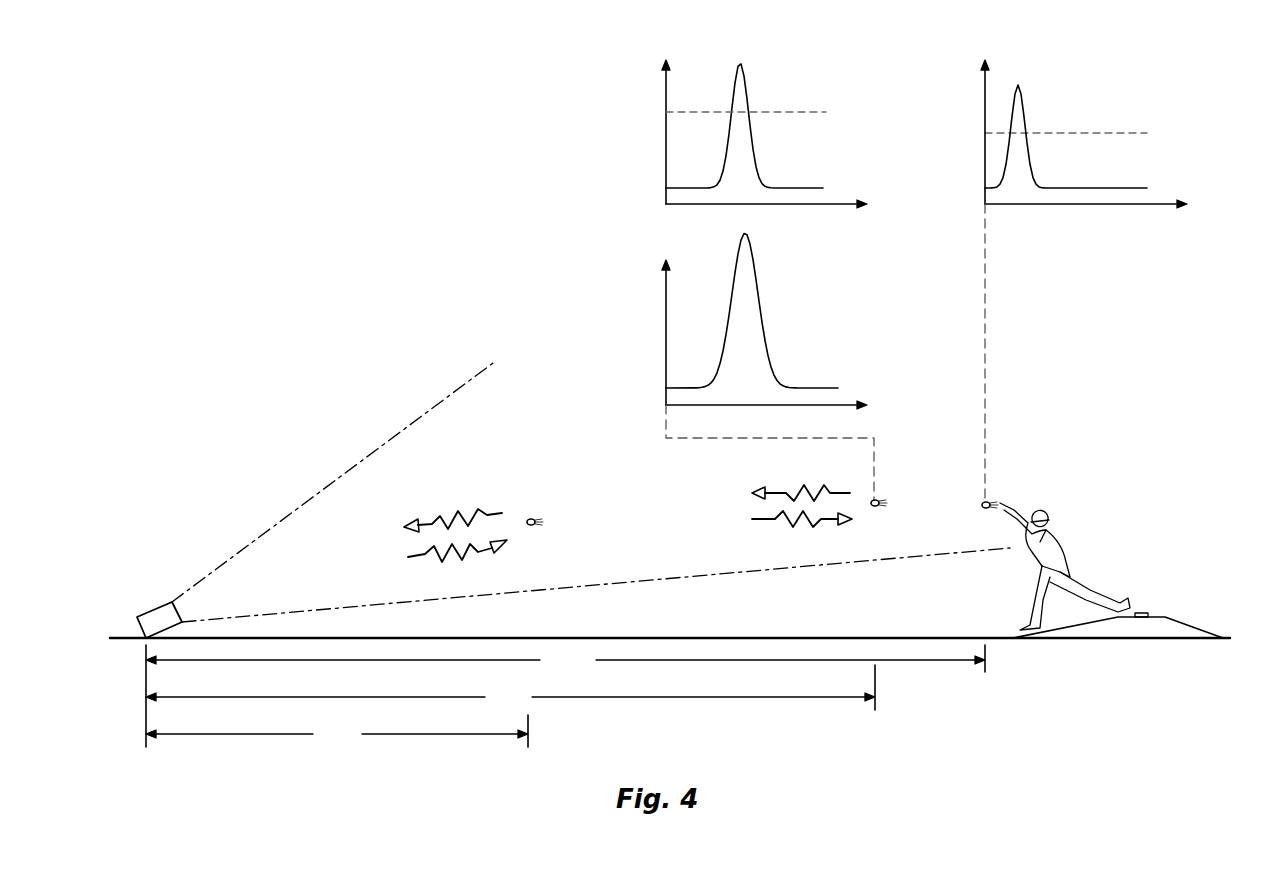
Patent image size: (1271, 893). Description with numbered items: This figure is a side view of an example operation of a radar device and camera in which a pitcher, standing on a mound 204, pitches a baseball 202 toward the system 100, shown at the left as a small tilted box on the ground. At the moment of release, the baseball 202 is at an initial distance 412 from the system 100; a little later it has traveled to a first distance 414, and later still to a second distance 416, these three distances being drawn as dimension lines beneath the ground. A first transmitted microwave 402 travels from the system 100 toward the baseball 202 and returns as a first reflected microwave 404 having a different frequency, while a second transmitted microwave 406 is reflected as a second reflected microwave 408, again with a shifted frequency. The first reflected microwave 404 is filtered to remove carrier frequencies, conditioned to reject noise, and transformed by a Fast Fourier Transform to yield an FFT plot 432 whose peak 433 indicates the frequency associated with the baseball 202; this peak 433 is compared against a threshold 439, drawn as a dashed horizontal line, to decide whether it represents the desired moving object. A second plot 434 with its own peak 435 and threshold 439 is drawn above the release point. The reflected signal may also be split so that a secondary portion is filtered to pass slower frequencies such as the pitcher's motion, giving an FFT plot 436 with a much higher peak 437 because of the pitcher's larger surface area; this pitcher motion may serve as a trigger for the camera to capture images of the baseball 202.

The system 100 is at (149, 610).
The baseball 202 is at (534, 517).
The pitching mound 204 is at (1186, 618).
The first transmitted microwave 402 is at (816, 525).
The first reflected microwave 404 is at (824, 485).
The second transmitted microwave 406 is at (460, 556).
The second reflected microwave 408 is at (460, 513).
The initial distance 412 is at (923, 660).
The first distance 414 is at (793, 697).
The second distance 416 is at (445, 734).
The FFT plot 432 is at (666, 92).
The peak 433 is at (745, 98).
The frequency graph axis 434 is at (985, 92).
The frequency response curve 435 is at (1021, 100).
The FFT plot 436 is at (666, 293).
The peak 437 is at (758, 300).
The threshold 439 is at (767, 118).